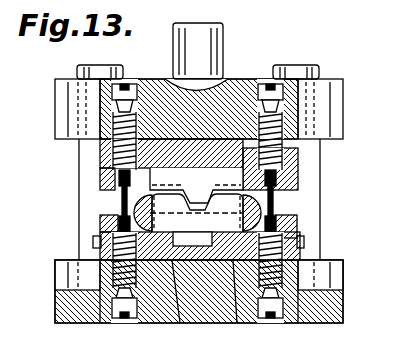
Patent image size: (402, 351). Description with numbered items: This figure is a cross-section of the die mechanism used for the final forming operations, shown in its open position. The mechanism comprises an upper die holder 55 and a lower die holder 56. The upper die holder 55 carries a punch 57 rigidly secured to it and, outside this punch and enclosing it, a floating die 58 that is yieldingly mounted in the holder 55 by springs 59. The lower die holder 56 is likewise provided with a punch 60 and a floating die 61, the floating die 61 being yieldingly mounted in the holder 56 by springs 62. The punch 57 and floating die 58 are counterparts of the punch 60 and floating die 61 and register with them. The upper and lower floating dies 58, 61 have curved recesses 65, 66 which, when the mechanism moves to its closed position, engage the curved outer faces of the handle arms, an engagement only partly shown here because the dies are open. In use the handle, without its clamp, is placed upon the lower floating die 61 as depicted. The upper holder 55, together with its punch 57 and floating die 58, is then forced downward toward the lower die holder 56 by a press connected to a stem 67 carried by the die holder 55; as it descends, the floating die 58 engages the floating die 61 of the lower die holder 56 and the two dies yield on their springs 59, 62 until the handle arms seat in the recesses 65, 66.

The upper die holder 55 is at (90, 112).
The lower die holder 56 is at (82, 308).
The punch 57 is at (225, 133).
The floating die 58 is at (298, 173).
The springs 59 is at (115, 142).
The punch 60 is at (180, 320).
The floating die 61 is at (295, 223).
The springs 62 is at (123, 280).
The curved recess 65 is at (118, 192).
The curved recess 66 is at (127, 200).
The stem 67 is at (193, 52).